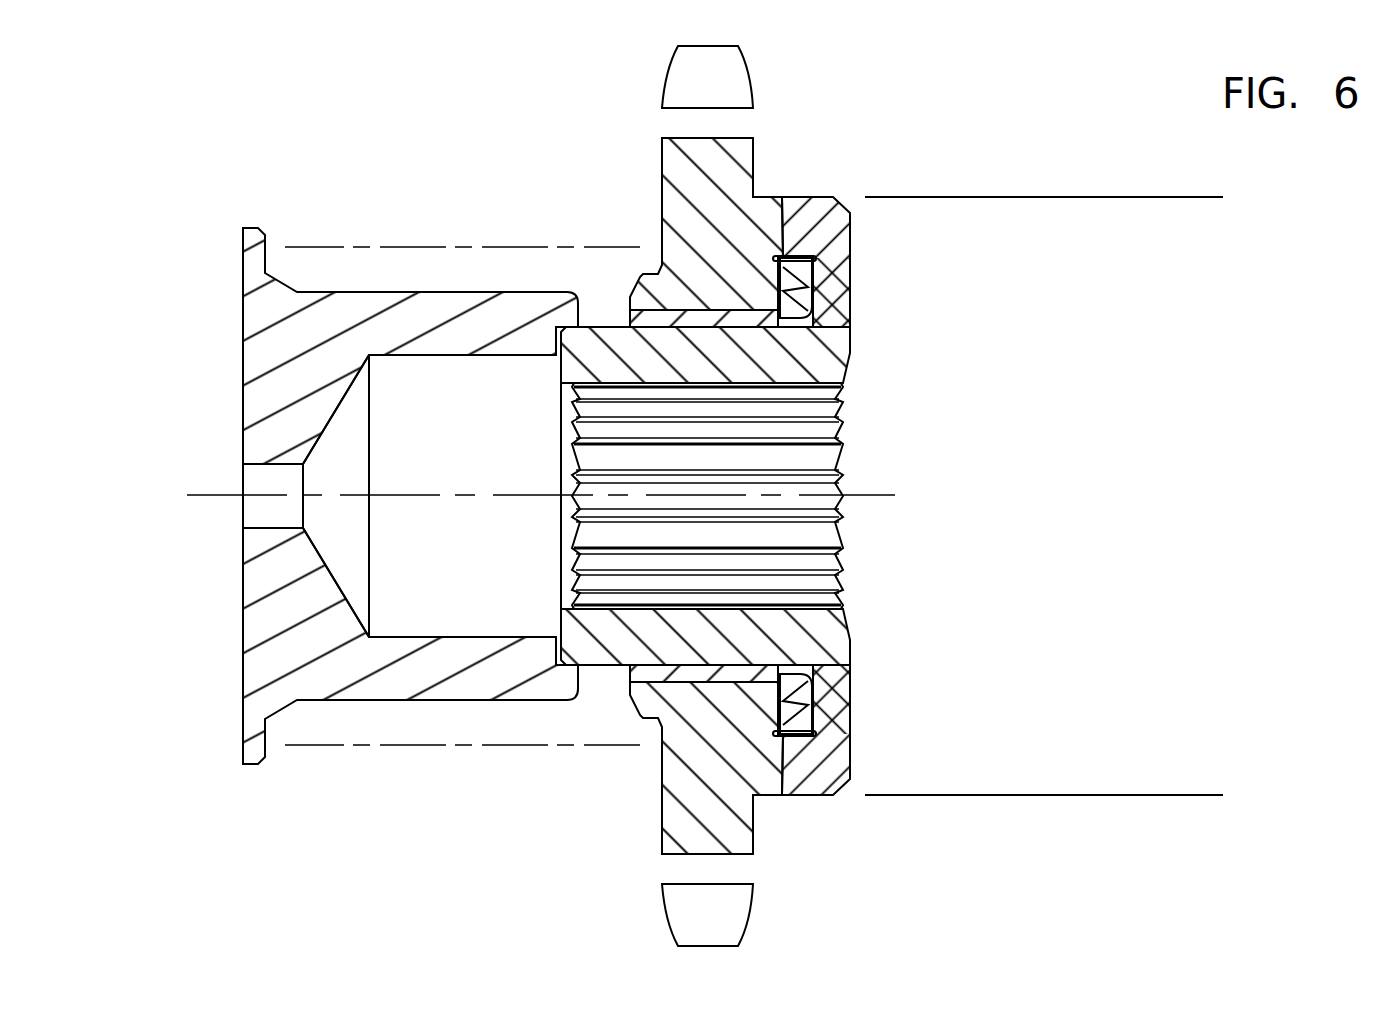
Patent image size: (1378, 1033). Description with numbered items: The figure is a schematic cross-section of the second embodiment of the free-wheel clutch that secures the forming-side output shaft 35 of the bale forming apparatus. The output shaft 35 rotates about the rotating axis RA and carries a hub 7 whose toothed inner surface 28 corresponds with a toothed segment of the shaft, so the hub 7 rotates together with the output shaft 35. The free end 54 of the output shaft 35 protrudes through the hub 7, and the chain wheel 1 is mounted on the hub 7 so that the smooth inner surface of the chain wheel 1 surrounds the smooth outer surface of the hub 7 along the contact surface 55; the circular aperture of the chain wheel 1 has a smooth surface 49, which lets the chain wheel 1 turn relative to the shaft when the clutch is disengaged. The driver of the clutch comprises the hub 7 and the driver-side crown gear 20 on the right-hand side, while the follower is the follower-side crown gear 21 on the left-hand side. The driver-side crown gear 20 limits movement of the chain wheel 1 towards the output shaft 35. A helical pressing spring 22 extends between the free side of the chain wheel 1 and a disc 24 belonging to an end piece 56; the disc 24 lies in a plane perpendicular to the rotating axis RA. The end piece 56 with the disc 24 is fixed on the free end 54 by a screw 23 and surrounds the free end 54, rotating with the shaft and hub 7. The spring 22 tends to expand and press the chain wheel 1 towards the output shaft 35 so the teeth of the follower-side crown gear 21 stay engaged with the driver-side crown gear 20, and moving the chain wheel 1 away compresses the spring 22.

The chain wheel 1 is at (693, 85).
The hub 7 is at (822, 647).
The driver-side crown gear 20 is at (823, 232).
The follower-side crown gear 21 is at (752, 211).
The helical pressing spring 22 is at (493, 241).
The screw 23 is at (258, 479).
The disc 24 is at (265, 303).
The toothed inner surface 28 is at (822, 463).
The forming-side output shaft 35 is at (1014, 591).
The smooth surface 49 is at (693, 306).
The free end of the output shaft 54 is at (425, 597).
The contact surface 55 is at (653, 315).
The end piece 56 is at (393, 305).
The rotating axis RA is at (398, 496).